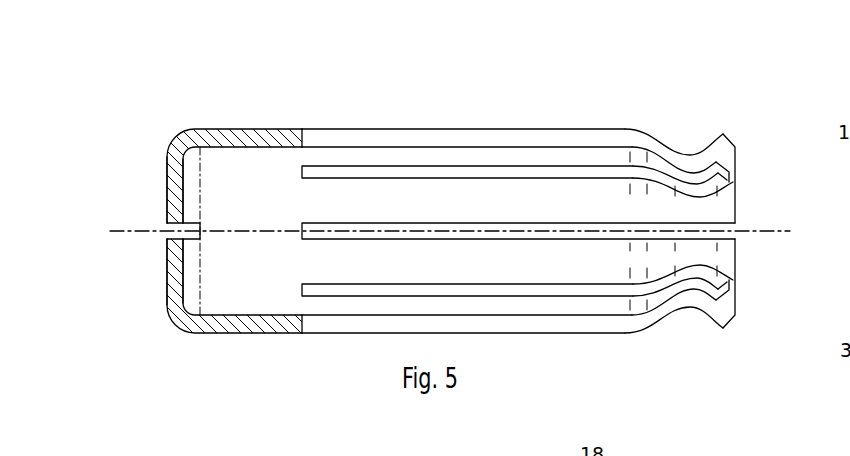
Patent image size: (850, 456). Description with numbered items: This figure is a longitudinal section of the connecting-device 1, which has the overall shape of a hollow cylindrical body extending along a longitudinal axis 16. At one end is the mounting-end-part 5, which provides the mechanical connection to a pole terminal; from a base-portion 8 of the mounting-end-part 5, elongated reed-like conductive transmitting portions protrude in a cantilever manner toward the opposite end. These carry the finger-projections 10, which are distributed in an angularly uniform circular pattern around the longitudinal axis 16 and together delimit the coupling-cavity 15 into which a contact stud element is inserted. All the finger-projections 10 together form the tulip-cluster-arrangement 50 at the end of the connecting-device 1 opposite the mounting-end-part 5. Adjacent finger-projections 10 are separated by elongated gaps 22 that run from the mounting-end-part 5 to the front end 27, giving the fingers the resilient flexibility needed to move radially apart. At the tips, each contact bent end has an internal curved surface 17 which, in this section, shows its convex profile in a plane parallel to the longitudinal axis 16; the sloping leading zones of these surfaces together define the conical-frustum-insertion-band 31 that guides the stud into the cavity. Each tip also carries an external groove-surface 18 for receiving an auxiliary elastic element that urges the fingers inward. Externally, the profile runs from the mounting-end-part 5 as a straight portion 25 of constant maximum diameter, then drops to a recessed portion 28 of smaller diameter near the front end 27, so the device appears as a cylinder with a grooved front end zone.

The connecting-device 1 is at (235, 182).
The mounting-end-part 5 is at (167, 245).
The base-portion 8 is at (168, 153).
The finger-projection 10 is at (587, 200).
The coupling-cavity 15 is at (357, 199).
The longitudinal axis 16 is at (535, 232).
The internal curved surface 17 is at (700, 289).
The external groove-surface 18 is at (690, 310).
The elongated gap 22 is at (452, 172).
The straight portion 25 is at (395, 129).
The front end 27 is at (758, 320).
The recessed portion 28 is at (690, 153).
The conical-frustum-insertion-band 31 is at (722, 172).
The tulip-cluster-arrangement 50 is at (759, 122).